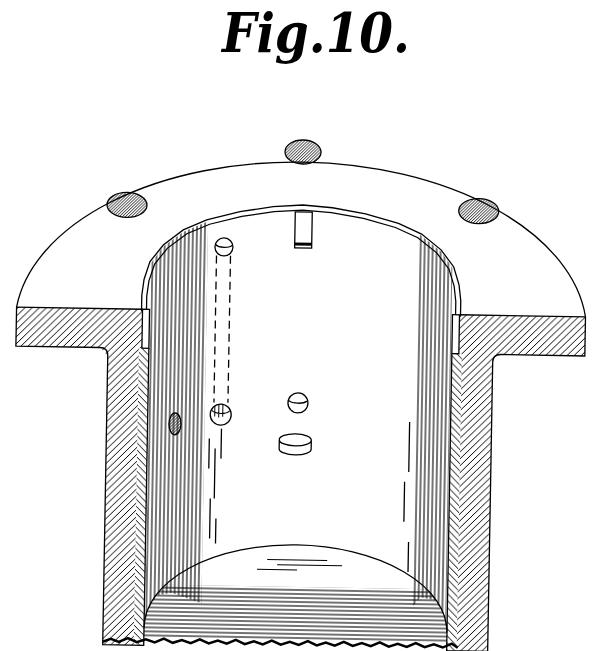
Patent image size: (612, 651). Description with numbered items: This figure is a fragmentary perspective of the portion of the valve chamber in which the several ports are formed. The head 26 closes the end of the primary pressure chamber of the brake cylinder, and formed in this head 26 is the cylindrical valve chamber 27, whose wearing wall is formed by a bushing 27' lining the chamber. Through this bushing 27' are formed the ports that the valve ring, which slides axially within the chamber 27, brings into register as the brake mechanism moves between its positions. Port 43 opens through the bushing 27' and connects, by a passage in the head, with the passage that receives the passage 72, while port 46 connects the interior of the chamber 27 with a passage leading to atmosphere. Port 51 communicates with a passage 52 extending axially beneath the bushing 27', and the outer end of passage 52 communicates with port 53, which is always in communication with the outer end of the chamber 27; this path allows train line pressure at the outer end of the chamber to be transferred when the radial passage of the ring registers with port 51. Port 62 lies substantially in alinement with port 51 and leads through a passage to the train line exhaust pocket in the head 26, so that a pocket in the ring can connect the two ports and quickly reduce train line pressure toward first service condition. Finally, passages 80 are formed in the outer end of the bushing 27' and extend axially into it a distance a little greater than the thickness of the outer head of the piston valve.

The head 26 is at (493, 498).
The valve chamber 27 is at (299, 431).
The bushing 27' is at (302, 251).
The port 43 is at (309, 451).
The port 46 is at (301, 392).
The port 51 is at (229, 425).
The passage 52 is at (225, 339).
The port 53 is at (229, 252).
The port 62 is at (180, 432).
The passage 72 is at (304, 141).
The passages 80 is at (141, 310).